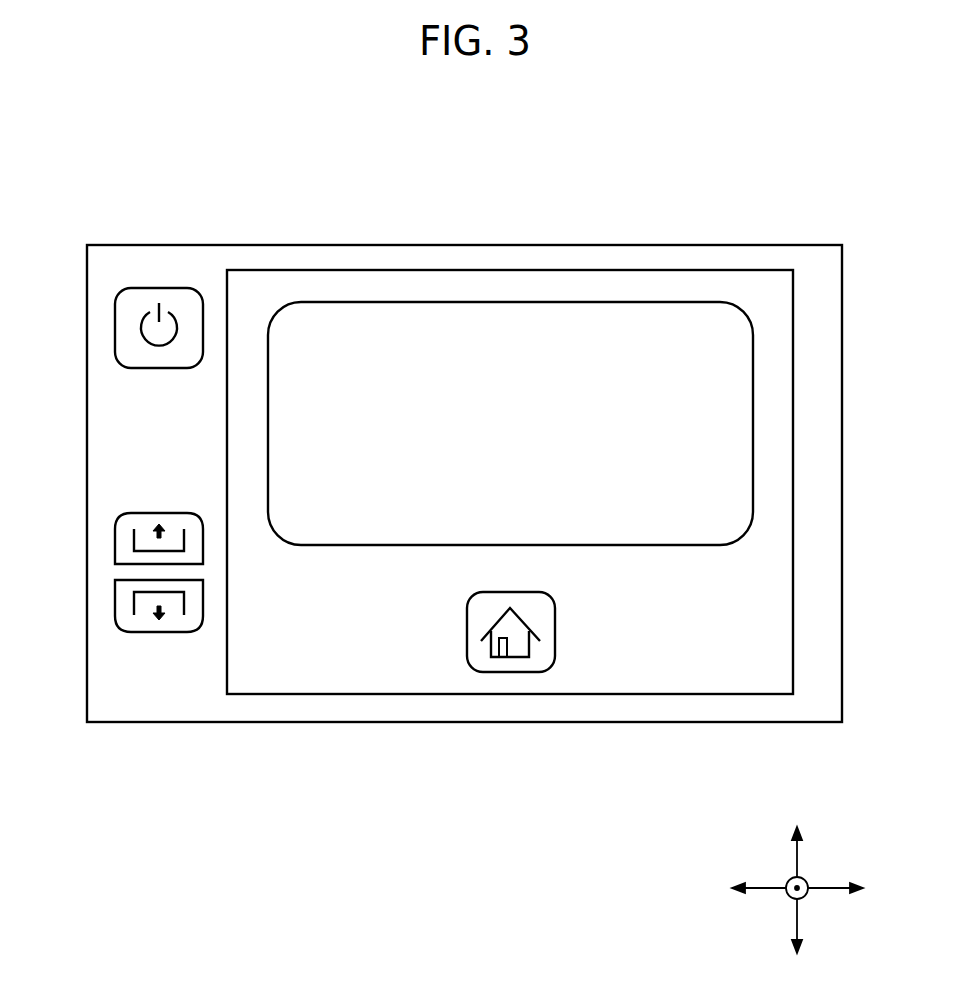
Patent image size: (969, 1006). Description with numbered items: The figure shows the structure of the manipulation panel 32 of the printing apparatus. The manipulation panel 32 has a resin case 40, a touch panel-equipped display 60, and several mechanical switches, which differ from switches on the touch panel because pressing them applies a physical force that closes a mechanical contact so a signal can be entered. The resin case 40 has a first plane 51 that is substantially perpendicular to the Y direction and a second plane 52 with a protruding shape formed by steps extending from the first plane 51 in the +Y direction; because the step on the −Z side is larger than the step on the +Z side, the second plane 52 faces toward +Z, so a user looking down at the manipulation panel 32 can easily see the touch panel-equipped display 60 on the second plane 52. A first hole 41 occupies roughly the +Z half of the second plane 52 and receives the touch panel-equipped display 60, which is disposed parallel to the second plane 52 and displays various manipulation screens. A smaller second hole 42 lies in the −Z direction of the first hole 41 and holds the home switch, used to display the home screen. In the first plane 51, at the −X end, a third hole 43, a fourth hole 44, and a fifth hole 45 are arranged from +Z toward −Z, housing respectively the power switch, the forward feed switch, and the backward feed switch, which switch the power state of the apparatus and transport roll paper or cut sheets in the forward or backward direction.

The manipulation panel 32 is at (477, 210).
The resin case 40 is at (842, 265).
The first hole 41 is at (753, 380).
The second hole 42 is at (555, 612).
The third hole 43 is at (125, 337).
The fourth hole 44 is at (125, 553).
The fifth hole 45 is at (125, 620).
The first plane 51 is at (842, 571).
The second plane 52 is at (793, 630).
The touch panel-equipped display 60 is at (730, 441).